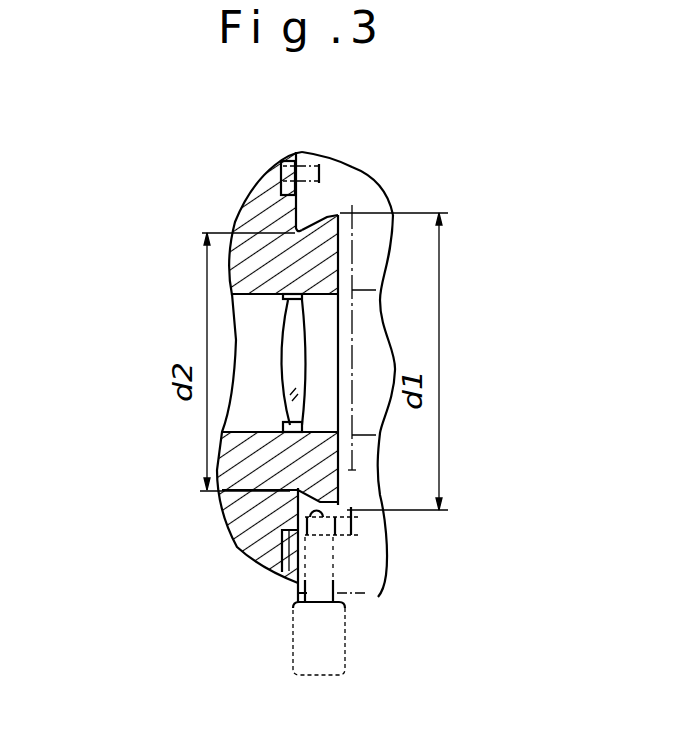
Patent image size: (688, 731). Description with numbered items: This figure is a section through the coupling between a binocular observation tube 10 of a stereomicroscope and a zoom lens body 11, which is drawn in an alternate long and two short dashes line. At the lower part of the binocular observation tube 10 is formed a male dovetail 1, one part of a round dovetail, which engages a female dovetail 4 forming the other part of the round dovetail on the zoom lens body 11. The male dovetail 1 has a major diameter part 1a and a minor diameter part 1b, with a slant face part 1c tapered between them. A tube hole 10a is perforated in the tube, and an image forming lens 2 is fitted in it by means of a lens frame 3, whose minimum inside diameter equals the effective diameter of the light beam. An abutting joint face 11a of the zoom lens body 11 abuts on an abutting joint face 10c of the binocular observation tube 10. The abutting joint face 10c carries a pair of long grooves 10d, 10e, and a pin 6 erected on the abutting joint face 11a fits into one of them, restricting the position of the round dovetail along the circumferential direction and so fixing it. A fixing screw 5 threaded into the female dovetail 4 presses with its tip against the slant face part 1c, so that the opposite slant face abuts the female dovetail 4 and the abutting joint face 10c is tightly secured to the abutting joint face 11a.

The male dovetail 1 is at (340, 480).
The major diameter part 1a is at (301, 230).
The minor diameter part 1b is at (292, 233).
The slant face part 1c is at (342, 210).
The image forming lens 2 is at (288, 350).
The lens frame 3 is at (285, 298).
The female dovetail 4 is at (352, 470).
The fixing screw 5 is at (312, 625).
The pin 6 is at (307, 162).
The binocular observation tube 10 is at (267, 183).
The tube hole 10a is at (252, 402).
The abutting joint face 10c is at (322, 195).
The long groove 10d is at (288, 156).
The long groove 10e is at (293, 552).
The zoom lens body 11 is at (368, 593).
The abutting joint face 11a is at (267, 193).